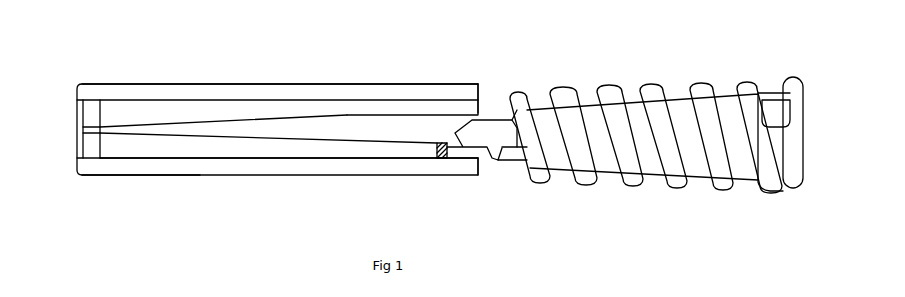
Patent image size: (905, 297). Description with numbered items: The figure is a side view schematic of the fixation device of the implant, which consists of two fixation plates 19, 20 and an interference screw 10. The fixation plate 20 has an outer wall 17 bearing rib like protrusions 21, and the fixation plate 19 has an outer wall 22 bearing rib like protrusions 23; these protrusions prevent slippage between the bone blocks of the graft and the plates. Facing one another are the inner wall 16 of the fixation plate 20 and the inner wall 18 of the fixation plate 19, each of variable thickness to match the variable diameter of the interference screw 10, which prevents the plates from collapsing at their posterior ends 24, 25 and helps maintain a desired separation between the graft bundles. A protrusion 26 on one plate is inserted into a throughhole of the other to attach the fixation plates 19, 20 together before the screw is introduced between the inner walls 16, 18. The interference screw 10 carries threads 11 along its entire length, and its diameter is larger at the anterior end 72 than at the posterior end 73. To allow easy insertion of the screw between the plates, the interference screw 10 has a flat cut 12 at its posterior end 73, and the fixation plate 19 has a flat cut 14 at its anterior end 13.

The interference screw 10 is at (802, 188).
The threads 11 is at (653, 82).
The flat cut 12 is at (497, 133).
The anterior end 13 is at (478, 168).
The flat cut 14 is at (455, 157).
The inner wall 16 is at (347, 115).
The outer wall 17 is at (298, 84).
The inner wall 18 is at (293, 138).
The fixation plate 19 is at (260, 165).
The fixation plate 20 is at (245, 93).
The rib like protrusions 21 is at (160, 84).
The outer wall 22 is at (172, 175).
The rib like protrusions 23 is at (128, 175).
The posterior end 24 is at (78, 118).
The posterior end 25 is at (78, 142).
The protrusion 26 is at (93, 138).
The anterior end 72 is at (805, 140).
The posterior end 73 is at (457, 137).